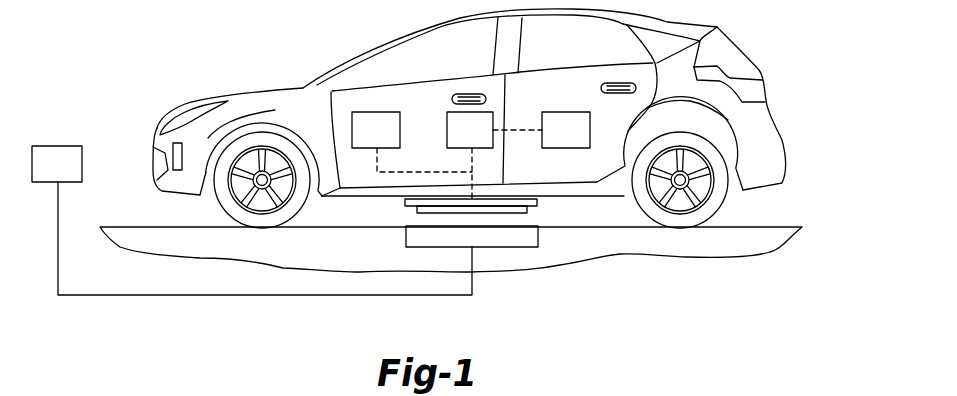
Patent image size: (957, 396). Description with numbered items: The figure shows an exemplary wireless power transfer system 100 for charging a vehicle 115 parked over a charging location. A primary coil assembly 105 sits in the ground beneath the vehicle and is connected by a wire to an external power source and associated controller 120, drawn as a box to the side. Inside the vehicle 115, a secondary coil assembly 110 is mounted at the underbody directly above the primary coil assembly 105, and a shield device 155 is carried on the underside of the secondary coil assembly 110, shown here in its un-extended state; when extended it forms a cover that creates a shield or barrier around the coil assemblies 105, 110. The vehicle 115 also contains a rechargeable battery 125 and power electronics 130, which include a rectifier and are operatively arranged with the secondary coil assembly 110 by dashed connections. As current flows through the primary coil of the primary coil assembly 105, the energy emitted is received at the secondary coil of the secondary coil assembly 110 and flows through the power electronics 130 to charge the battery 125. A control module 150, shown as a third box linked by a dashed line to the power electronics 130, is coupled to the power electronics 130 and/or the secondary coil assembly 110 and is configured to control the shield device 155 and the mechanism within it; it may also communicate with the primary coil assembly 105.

The wireless power transfer system 100 is at (549, 231).
The primary coil assembly 105 is at (522, 241).
The secondary coil assembly 110 is at (537, 206).
The vehicle 115 is at (251, 88).
The external power source and associated controller 120 is at (71, 175).
The rechargeable battery 125 is at (580, 141).
The power electronics 130 is at (484, 141).
The control module 150 is at (390, 141).
The shield device 155 is at (523, 209).